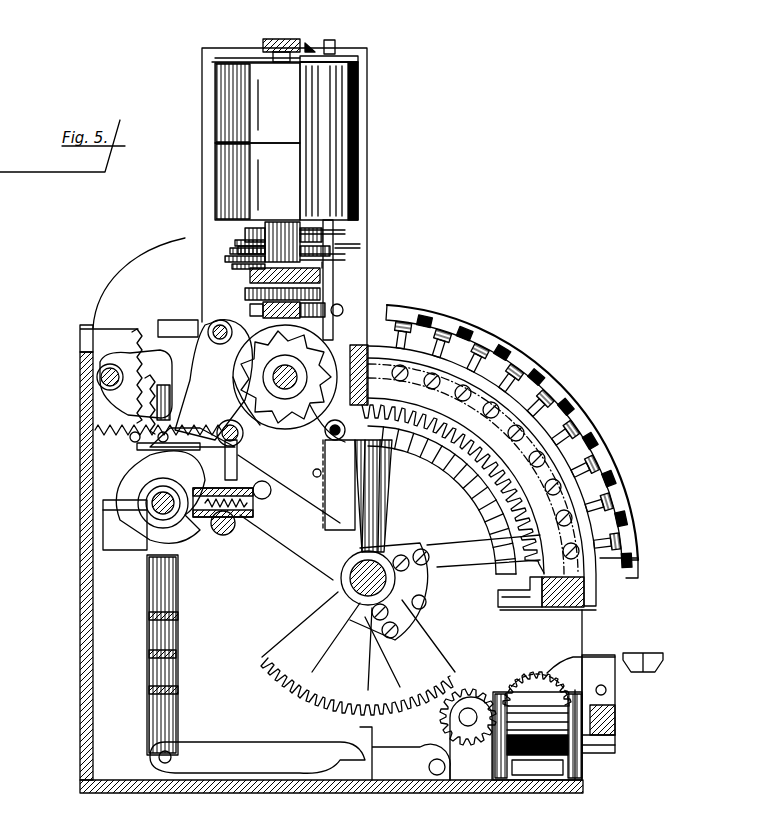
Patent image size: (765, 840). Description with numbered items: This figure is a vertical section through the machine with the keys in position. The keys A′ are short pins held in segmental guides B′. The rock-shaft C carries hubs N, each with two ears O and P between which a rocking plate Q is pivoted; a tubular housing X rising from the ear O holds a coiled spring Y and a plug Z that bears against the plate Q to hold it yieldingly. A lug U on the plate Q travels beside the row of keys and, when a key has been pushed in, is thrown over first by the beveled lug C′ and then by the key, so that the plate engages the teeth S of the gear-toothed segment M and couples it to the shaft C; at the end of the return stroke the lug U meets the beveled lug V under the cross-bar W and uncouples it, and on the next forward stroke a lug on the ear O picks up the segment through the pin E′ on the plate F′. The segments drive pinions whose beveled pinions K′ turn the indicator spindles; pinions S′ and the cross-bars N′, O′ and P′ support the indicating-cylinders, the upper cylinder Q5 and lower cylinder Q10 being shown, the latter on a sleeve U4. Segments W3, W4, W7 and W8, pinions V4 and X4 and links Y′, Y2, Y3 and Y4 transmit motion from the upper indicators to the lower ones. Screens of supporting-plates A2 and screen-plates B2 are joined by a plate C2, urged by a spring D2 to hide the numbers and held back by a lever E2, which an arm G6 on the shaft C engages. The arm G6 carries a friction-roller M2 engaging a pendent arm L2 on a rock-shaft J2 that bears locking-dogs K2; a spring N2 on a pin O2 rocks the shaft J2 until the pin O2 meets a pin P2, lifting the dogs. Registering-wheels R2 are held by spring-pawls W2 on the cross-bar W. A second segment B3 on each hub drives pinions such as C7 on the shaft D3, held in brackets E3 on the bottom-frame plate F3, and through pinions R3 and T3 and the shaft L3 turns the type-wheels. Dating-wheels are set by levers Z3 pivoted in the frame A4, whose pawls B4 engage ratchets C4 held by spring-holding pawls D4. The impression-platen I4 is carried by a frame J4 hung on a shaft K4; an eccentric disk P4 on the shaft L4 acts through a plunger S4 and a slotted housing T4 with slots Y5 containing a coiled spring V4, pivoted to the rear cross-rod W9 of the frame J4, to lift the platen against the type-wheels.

The supporting-plate A2 is at (265, 60).
The top cross-bar P′ is at (285, 40).
The spring D2 is at (312, 48).
The lever E2 is at (333, 48).
The horizontal plate C2 is at (340, 58).
The screen-plate B2 is at (362, 66).
The indicating-cylinder Q5 is at (257, 103).
The indicating-cylinder Q10 is at (257, 181).
The sleeve U4 is at (328, 222).
The link Y4 is at (280, 222).
The link Y2 is at (255, 228).
The link Y3 is at (311, 228).
The gear-toothed segment W7 is at (347, 232).
The pinion X4 is at (362, 246).
The link Y′ is at (330, 256).
The gear-toothed segment W3 is at (235, 242).
The gear-toothed segment W4 is at (230, 250).
The gear-toothed segment W8 is at (230, 258).
The pinion V4 is at (232, 266).
The cross-bar O′ is at (250, 276).
The pinion S′ is at (245, 292).
The cross-bar N′ is at (250, 310).
The registering-wheel R2 is at (340, 308).
The beveled pinion K′ is at (357, 345).
The key A′ is at (565, 420).
The segmental guide B′ is at (600, 470).
The cross-bar W is at (473, 451).
The beveled lug V is at (478, 457).
The gear-toothed segment M is at (380, 402).
The lug U is at (367, 395).
The plug Z is at (340, 395).
The tubular housing X is at (380, 452).
The ear P is at (352, 518).
The rocking plate Q is at (392, 480).
The coiled spring Y is at (390, 498).
The teeth S is at (480, 460).
The ear O is at (385, 527).
The hub N is at (412, 542).
The rock-shaft C is at (350, 578).
The plate F′ is at (420, 610).
The pin E′ is at (426, 602).
The beveled lug C′ is at (498, 585).
The second segment B3 is at (352, 690).
The pinion R3 is at (322, 661).
The spring N2 is at (95, 430).
The pin O2 is at (215, 392).
The pin P2 is at (258, 392).
The rock-shaft J2 is at (300, 425).
The spring-pawl W2 is at (327, 423).
The locking-dog K2 is at (312, 472).
The pendent arm L2 is at (228, 460).
The revoluble shaft L4 is at (103, 510).
The eccentric disk P4 is at (163, 491).
The friction-roller M2 is at (240, 517).
The arm G6 is at (268, 497).
The plunger S4 is at (147, 582).
The tubular housing T4 is at (147, 655).
The slot Y5 is at (180, 626).
The frame J4 is at (240, 752).
The rear cross-rod W9 is at (158, 757).
The bottom-frame plate F3 is at (350, 794).
The bracket E3 is at (450, 725).
The shaft K4 is at (439, 775).
The shaft D3 is at (468, 717).
The pinion C7 is at (470, 690).
The shaft L3 is at (455, 752).
The impression-platen I4 is at (540, 770).
The ratchet C4 is at (545, 672).
The pinion T3 is at (530, 680).
The spring-holding pawl D4 is at (581, 669).
The frame A4 is at (600, 665).
The lever Z3 is at (615, 690).
The pawl B4 is at (577, 782).